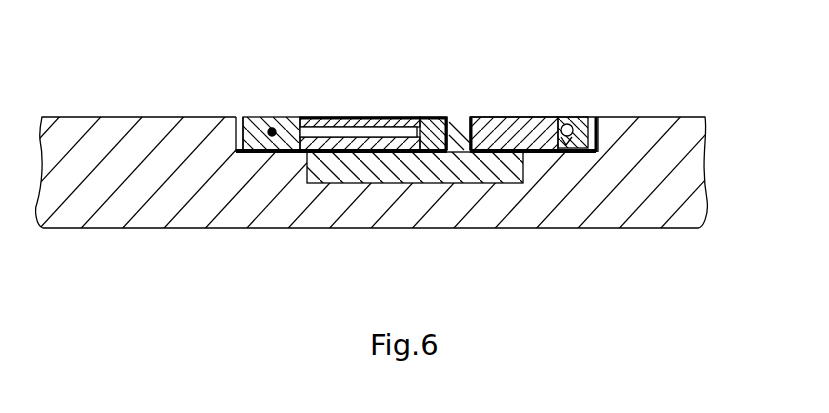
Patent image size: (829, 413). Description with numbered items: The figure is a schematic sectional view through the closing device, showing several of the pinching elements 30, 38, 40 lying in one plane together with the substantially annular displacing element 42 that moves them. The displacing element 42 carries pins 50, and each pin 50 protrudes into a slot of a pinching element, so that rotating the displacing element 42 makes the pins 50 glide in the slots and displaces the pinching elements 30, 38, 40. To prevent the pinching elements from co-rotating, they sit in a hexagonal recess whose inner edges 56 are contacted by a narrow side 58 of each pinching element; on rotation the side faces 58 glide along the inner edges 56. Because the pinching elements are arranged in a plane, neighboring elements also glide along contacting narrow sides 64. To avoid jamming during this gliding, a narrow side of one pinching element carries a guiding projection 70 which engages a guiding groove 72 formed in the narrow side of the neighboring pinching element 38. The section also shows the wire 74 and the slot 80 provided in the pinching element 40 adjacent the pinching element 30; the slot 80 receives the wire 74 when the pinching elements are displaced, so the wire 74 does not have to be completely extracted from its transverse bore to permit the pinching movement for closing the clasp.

The pinching element 30 is at (285, 138).
The pinching element 38 is at (576, 123).
The pinching element 40 is at (425, 132).
The displacing element 42 is at (462, 163).
The pin 50 is at (461, 145).
The inner edge 56 is at (238, 117).
The narrow side 58 is at (233, 148).
The narrow side 64 is at (557, 119).
The guiding projection 70 is at (565, 146).
The guiding groove 72 is at (573, 129).
The wire 74 is at (269, 124).
The slot 80 is at (327, 132).